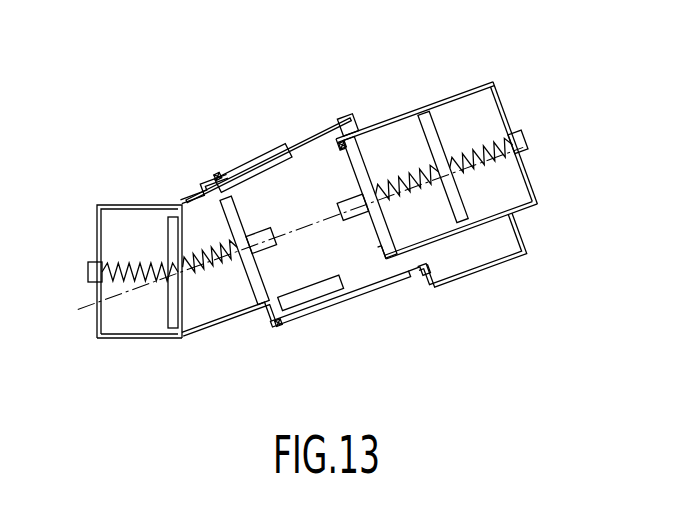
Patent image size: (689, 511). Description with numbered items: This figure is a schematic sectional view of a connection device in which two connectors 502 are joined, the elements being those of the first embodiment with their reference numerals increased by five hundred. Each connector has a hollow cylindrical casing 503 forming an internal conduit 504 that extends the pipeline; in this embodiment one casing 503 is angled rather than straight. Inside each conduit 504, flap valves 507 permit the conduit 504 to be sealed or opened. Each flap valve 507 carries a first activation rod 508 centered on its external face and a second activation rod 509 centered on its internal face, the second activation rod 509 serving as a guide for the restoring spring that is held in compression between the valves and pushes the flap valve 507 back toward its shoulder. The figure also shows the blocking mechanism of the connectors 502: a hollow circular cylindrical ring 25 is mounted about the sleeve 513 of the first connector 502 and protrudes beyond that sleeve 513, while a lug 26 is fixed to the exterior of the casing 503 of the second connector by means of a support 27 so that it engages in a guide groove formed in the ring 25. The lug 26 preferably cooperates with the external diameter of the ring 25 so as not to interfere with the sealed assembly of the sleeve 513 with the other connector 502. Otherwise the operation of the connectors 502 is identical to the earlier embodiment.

The ring 25 is at (353, 302).
The lug 26 is at (423, 275).
The support 27 is at (493, 270).
The connector 502 is at (539, 211).
The casing 503 is at (152, 340).
The conduit 504 is at (110, 238).
The flap valve 507 is at (462, 55).
The first activation rod 508 is at (248, 163).
The second activation rod 509 is at (210, 280).
The sleeve 513 is at (272, 172).